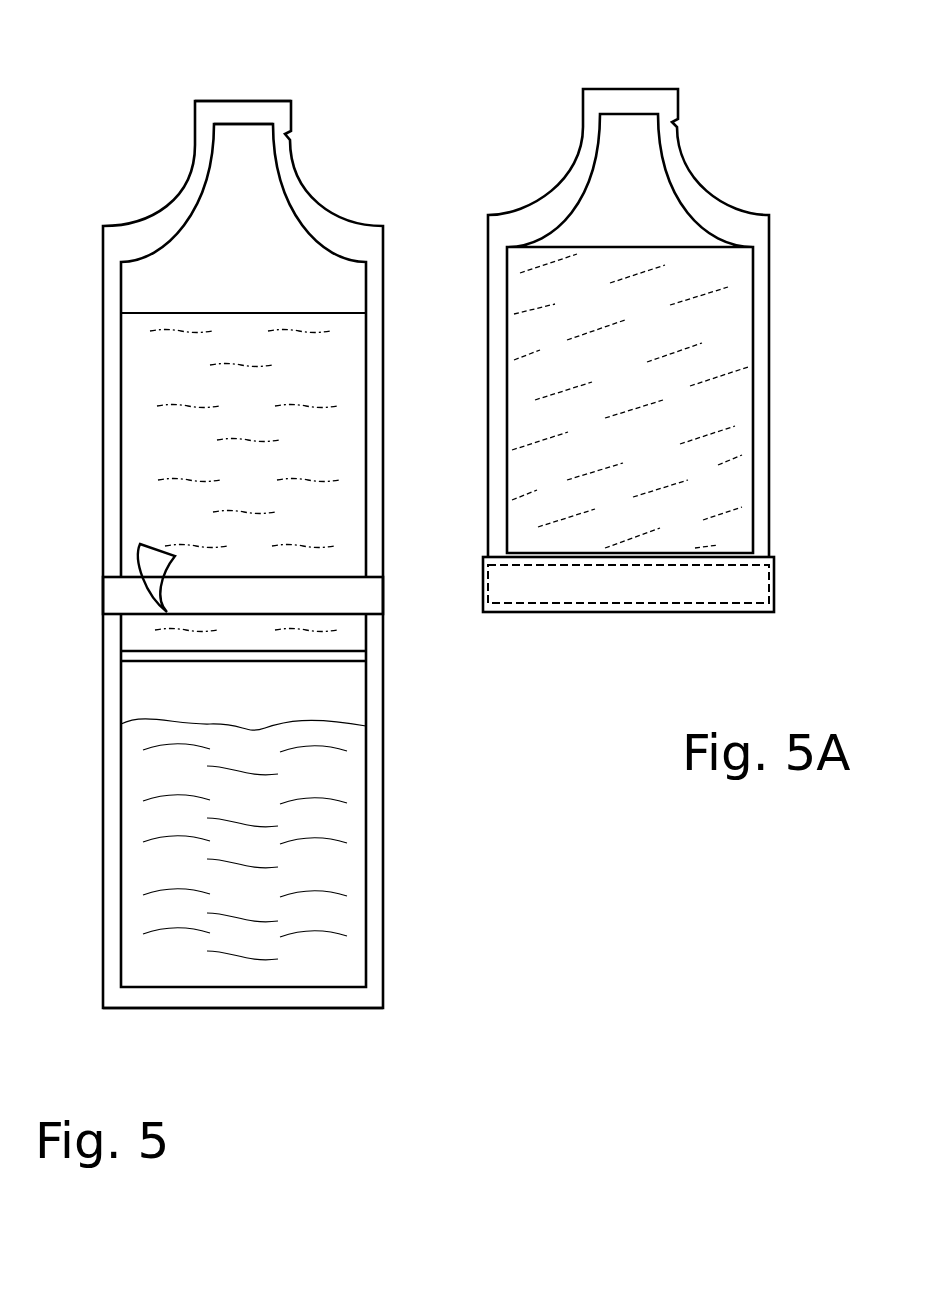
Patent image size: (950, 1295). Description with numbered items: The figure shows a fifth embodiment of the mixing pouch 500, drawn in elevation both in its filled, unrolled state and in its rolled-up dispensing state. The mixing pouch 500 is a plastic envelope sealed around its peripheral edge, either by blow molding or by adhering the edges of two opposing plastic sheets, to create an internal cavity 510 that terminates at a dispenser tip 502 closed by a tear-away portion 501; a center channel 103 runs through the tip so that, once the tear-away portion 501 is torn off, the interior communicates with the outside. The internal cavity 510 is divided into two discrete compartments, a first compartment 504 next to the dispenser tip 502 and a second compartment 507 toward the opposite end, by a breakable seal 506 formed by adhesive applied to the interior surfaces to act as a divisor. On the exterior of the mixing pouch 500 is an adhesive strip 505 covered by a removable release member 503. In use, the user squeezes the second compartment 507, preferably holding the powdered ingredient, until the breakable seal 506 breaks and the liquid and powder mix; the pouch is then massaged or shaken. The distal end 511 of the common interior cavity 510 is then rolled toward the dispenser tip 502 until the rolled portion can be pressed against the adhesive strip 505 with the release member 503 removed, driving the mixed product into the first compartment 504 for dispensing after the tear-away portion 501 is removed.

In FIG. 5, the mixing pouch 500 is at (168, 86).
In FIG. 5, the tear-away portion 501 is at (279, 114).
In FIG. 5A, the tear-away portion 501 is at (662, 104).
In FIG. 5, the dispenser tip 502 is at (237, 145).
In FIG. 5A, the dispenser tip 502 is at (578, 155).
In FIG. 5, the center channel 103 is at (215, 203).
In FIG. 5, the internal cavity 510 is at (265, 232).
In FIG. 5A, the internal cavity 510 is at (653, 220).
In FIG. 5, the first compartment 504 is at (203, 440).
In FIG. 5, the removable release member 503 is at (150, 557).
In FIG. 5, the adhesive strip 505 is at (127, 590).
In FIG. 5, the breakable seal 506 is at (197, 655).
In FIG. 5, the second compartment 507 is at (183, 782).
In FIG. 5, the distal end 511 is at (297, 1001).